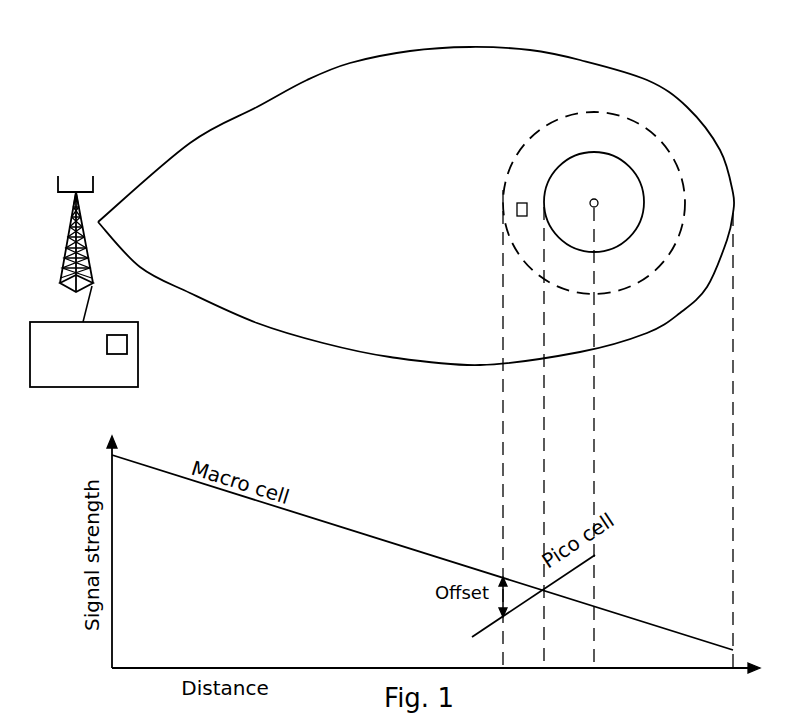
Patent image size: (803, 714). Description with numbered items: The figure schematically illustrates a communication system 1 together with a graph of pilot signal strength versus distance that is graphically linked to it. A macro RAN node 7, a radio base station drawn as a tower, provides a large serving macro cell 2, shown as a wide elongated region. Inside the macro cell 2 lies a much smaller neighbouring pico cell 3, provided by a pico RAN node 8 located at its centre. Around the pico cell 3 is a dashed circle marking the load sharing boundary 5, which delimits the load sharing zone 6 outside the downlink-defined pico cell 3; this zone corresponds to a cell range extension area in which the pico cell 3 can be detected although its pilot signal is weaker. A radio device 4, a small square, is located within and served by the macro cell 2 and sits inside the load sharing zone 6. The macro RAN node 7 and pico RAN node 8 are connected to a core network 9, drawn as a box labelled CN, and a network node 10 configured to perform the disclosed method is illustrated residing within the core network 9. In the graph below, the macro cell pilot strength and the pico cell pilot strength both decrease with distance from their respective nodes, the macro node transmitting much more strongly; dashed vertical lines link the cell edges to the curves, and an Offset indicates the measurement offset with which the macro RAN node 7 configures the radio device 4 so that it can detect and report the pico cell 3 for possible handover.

The communication system 1 is at (86, 110).
The macro cell 2 is at (483, 69).
The pico cell 3 is at (616, 178).
The radio device 4 is at (520, 207).
The load sharing boundary 5 is at (680, 181).
The load sharing zone 6 is at (662, 230).
The macro RAN node 7 is at (67, 240).
The pico RAN node 8 is at (594, 198).
The core network 9 is at (77, 351).
The network node 10 is at (126, 344).